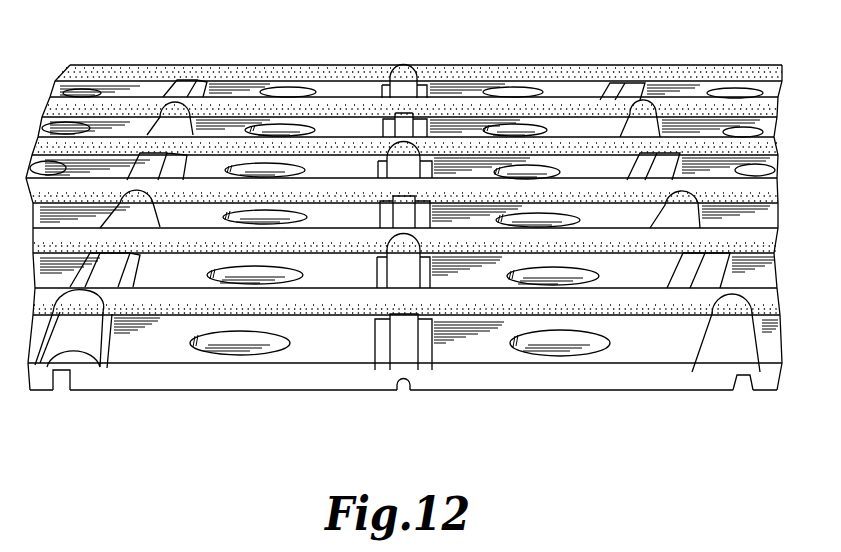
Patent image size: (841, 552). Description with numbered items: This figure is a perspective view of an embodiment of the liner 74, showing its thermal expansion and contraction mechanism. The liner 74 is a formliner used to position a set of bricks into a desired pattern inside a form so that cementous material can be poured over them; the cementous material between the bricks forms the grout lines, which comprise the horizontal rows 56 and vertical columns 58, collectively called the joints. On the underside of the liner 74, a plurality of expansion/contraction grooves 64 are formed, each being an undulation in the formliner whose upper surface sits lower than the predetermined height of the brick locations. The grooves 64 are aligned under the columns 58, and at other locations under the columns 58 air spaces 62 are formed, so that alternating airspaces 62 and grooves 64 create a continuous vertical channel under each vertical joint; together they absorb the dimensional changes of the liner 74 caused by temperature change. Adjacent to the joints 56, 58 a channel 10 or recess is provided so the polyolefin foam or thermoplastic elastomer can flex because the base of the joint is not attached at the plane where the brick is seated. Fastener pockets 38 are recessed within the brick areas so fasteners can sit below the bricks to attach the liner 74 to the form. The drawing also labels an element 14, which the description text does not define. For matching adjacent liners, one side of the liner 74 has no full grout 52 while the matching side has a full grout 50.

The full grout 50 is at (742, 66).
The horizontal row 56 is at (760, 242).
The liner 74 is at (434, 61).
The spacer block 14 is at (413, 115).
The vertical column 58 is at (180, 127).
The no full grout 52 is at (292, 378).
The air space 62 is at (62, 390).
The expansion/contraction groove 64 is at (398, 390).
The fastener pocket 38 is at (570, 352).
The channel 10 is at (705, 372).